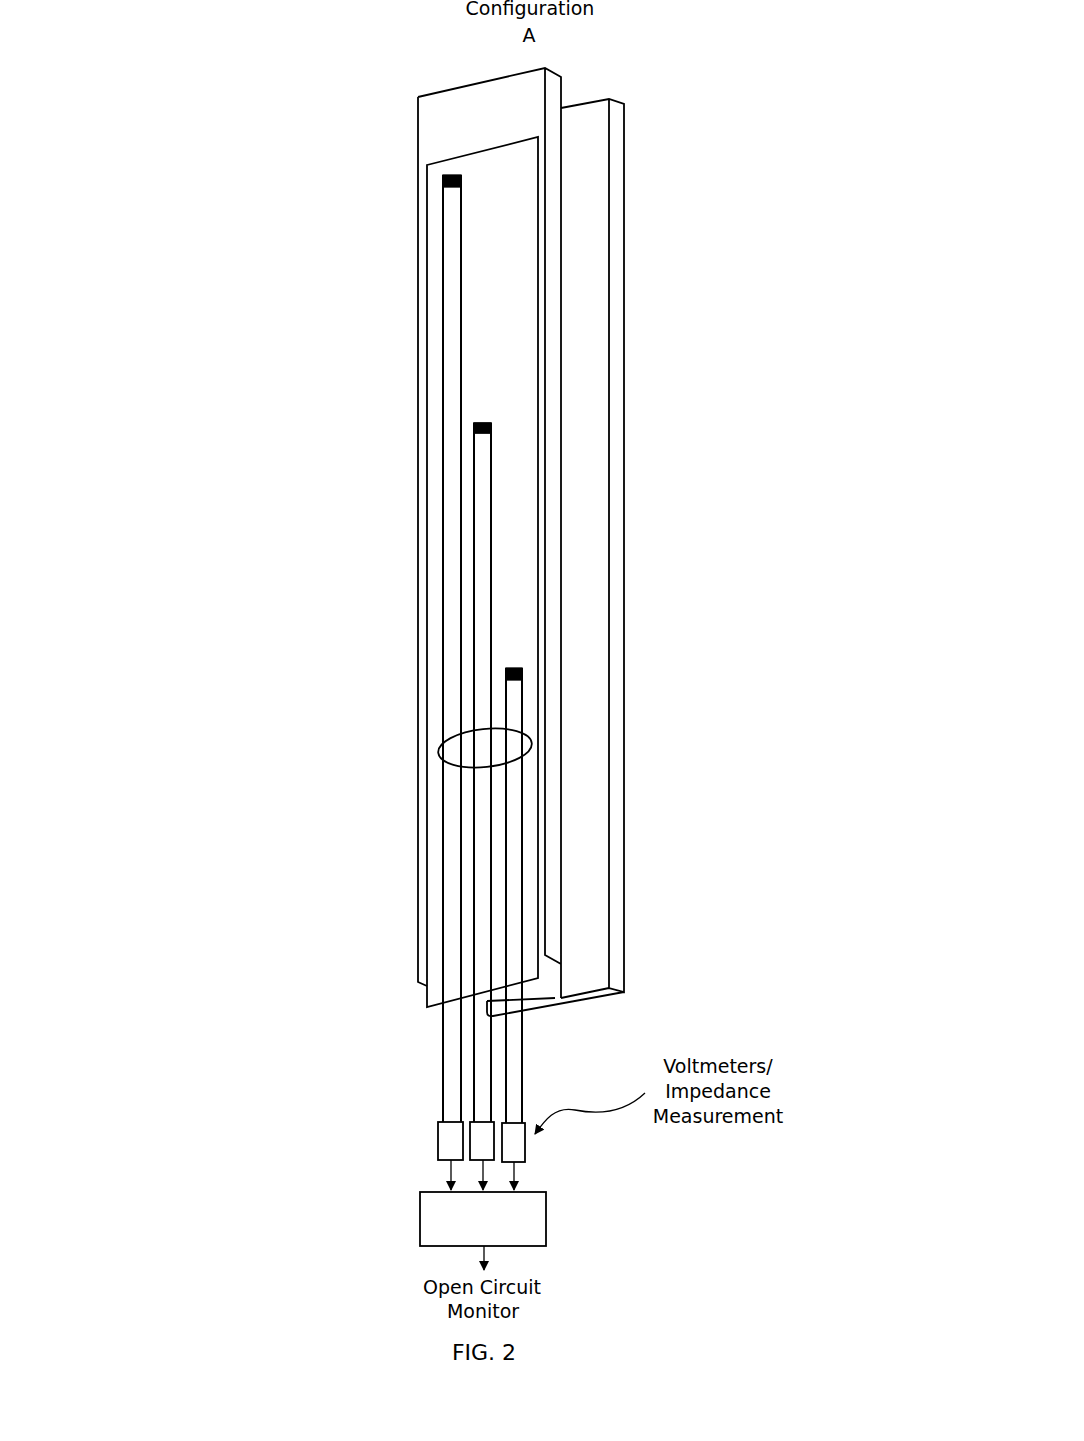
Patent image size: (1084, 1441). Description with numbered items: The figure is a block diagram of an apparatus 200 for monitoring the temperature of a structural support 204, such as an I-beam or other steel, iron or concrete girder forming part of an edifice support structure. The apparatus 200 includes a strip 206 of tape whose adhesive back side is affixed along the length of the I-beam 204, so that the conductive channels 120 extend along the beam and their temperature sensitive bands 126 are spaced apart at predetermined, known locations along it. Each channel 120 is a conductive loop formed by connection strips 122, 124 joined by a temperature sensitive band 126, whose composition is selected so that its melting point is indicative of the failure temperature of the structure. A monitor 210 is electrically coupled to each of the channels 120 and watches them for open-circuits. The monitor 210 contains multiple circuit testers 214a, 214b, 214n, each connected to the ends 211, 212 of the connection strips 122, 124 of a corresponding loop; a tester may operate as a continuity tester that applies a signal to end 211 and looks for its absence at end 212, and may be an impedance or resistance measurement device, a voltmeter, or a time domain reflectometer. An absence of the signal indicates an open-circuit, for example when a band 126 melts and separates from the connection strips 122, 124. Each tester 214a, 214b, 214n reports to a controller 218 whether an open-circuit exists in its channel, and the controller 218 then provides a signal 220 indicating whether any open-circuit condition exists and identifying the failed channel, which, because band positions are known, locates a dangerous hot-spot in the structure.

The apparatus 200 is at (379, 438).
The structural support 204 is at (612, 100).
The strip of tape 206 is at (460, 150).
The conductive channels 120 is at (437, 760).
The connection strip 122 is at (473, 491).
The connection strip 124 is at (495, 543).
The temperature sensitive band 126 is at (480, 423).
The monitor 210 is at (338, 1182).
The end 211 is at (508, 1057).
The end 212 is at (524, 1090).
The circuit tester 214a is at (437, 1140).
The circuit tester 214b is at (483, 1121).
The circuit tester 214n is at (526, 1150).
The controller 218 is at (549, 1222).
The signal 220 is at (488, 1252).